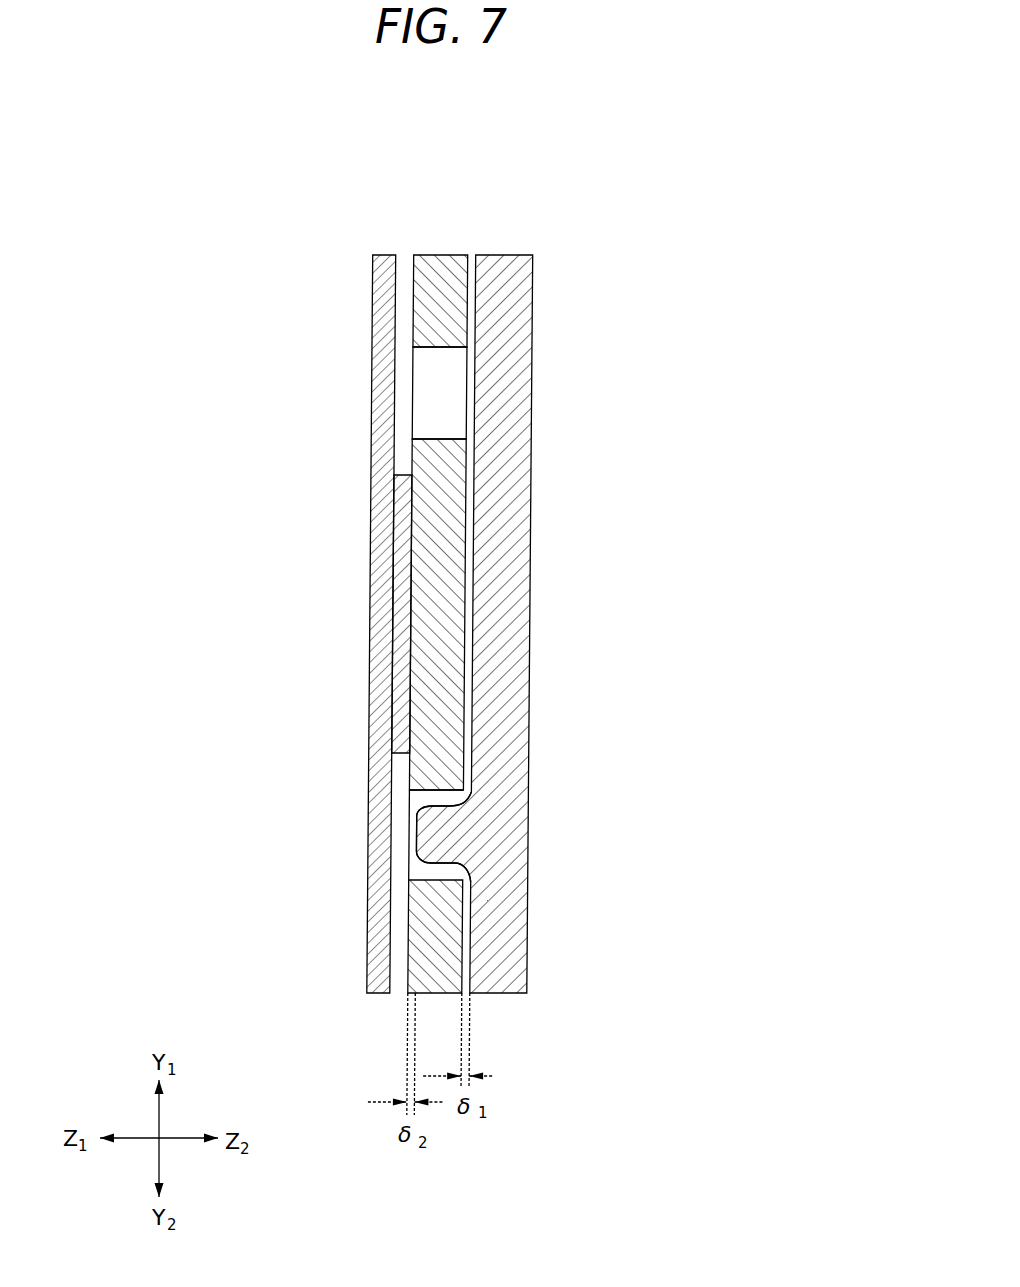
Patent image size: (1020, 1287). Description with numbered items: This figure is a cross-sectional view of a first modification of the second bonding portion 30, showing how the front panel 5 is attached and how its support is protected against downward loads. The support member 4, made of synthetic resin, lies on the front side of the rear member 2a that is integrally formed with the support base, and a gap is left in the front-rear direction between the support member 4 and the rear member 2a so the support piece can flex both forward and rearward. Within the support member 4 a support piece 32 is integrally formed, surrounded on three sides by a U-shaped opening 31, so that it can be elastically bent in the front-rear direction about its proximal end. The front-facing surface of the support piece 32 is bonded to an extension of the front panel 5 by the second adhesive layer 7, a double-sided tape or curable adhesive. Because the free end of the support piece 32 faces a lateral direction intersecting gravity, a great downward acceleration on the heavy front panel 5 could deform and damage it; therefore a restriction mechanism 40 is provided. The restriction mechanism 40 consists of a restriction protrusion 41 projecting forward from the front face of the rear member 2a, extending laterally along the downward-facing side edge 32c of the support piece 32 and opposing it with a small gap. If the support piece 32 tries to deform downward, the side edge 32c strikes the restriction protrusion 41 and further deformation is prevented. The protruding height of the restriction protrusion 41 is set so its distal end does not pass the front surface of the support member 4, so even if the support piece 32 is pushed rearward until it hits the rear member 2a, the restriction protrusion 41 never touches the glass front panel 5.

The second bonding portion 30 is at (579, 235).
The support member 4 is at (447, 255).
The front panel 5 is at (387, 321).
The second adhesive layer 7 is at (399, 600).
The U-shaped opening 31 is at (438, 402).
The support piece 32 is at (432, 527).
The side edge 32c is at (423, 793).
The rear member 2a is at (508, 445).
The restriction protrusion 41 is at (443, 833).
The restriction mechanism 40 is at (392, 833).